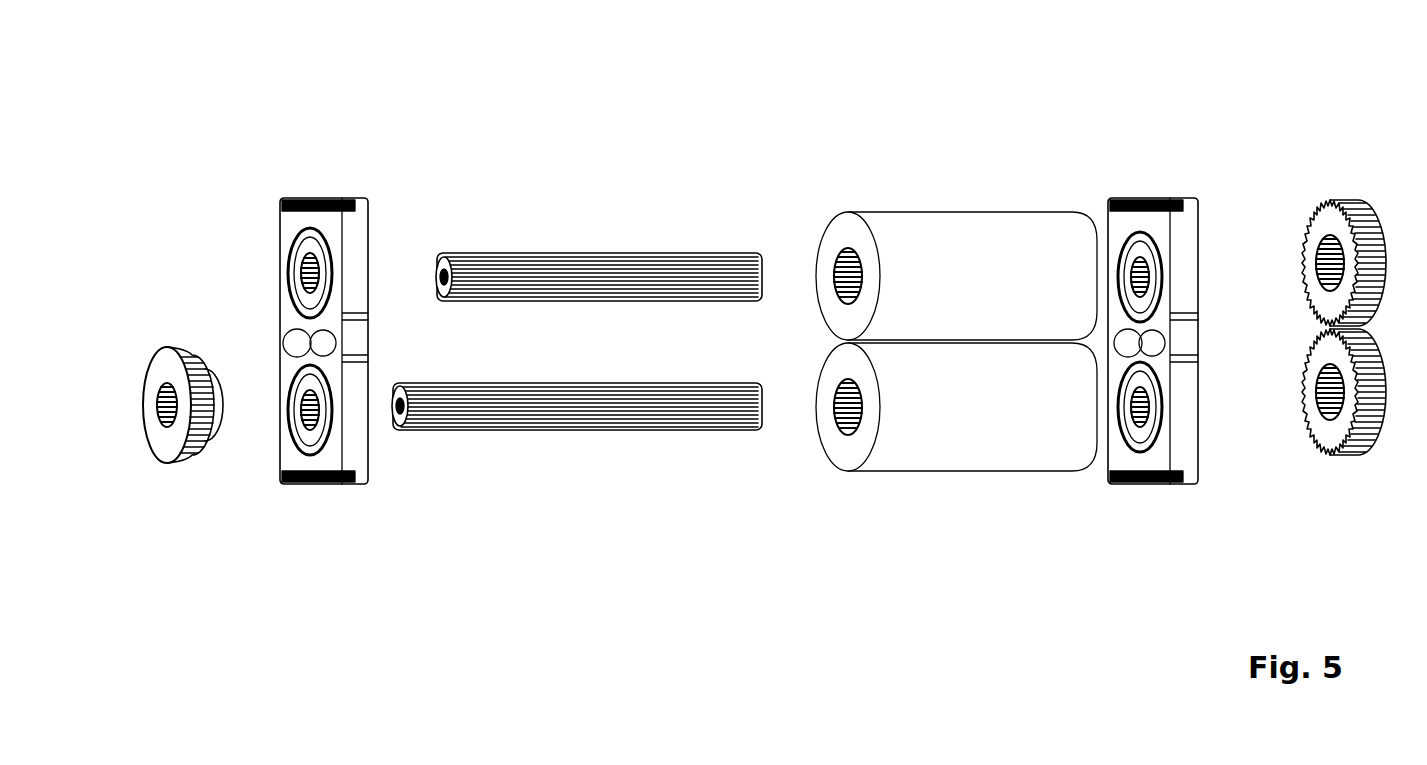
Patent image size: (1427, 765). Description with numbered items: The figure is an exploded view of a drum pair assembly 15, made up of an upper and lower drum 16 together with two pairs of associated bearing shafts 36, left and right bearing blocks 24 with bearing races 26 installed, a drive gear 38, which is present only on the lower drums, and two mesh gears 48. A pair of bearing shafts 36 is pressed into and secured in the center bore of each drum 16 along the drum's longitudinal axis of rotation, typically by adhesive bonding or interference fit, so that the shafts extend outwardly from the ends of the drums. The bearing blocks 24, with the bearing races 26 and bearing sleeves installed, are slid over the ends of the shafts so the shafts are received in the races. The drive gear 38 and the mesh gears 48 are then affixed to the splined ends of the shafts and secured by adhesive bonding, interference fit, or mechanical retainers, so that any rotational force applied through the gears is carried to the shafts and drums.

The drum pair assembly 15 is at (1280, 137).
The drum 16 is at (903, 214).
The bearing block 24 is at (320, 202).
The bearing race 26 is at (305, 237).
The bearing shaft 36 is at (540, 252).
The drive gear 38 is at (168, 372).
The mesh gear 48 is at (1345, 207).